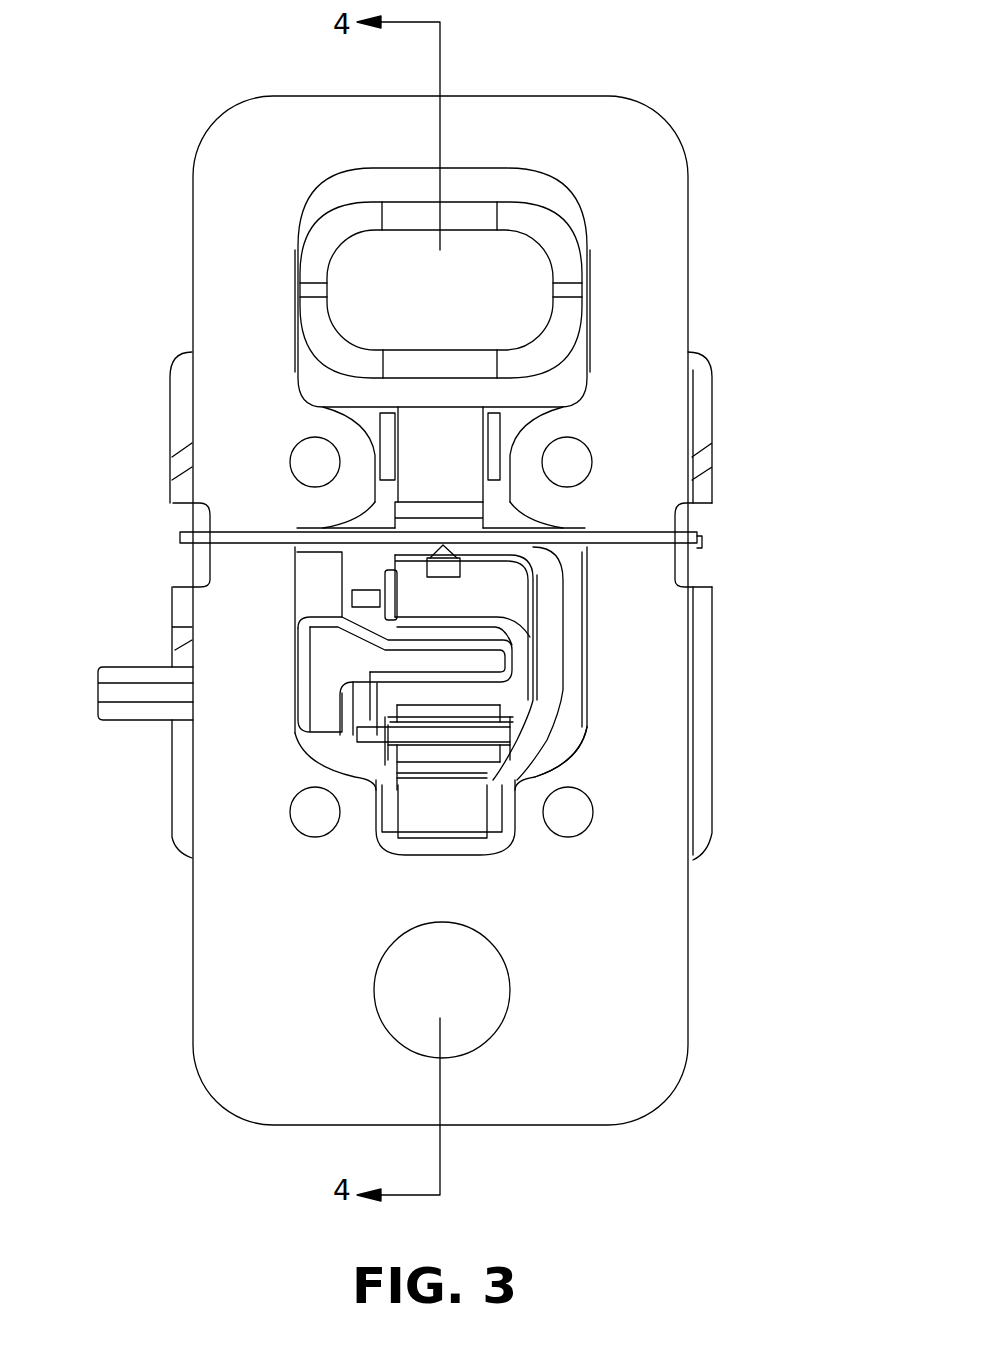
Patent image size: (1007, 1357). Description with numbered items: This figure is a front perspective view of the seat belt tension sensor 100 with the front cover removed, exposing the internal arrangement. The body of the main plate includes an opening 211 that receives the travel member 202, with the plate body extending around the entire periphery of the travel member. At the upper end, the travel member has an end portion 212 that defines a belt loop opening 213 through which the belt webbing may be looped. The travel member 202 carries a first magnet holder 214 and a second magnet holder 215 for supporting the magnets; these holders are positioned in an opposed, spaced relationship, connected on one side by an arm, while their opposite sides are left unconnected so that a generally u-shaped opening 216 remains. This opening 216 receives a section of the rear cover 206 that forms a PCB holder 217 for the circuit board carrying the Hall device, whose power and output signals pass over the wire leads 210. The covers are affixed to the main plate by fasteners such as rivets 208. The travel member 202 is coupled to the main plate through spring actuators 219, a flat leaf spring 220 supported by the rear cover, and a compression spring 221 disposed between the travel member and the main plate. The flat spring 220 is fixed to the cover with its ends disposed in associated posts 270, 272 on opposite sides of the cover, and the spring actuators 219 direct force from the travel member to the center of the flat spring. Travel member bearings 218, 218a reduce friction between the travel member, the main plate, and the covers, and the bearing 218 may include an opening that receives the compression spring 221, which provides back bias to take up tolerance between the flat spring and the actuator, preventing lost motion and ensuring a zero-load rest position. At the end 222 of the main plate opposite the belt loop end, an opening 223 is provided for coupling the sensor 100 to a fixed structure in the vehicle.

The seat belt tension sensor 100 is at (525, 80).
The travel member 202 is at (337, 233).
The end portion 212 is at (532, 228).
The belt loop opening 213 is at (520, 283).
The travel member bearing 218a is at (433, 458).
The rear cover 206 is at (698, 385).
The spring actuator 219 is at (447, 565).
The first flat leaf spring 220 is at (200, 537).
The post 270 is at (177, 572).
The first magnet holder 214 is at (497, 602).
The post 272 is at (705, 573).
The PCB holder 217 is at (337, 658).
The opening 211 is at (575, 653).
The wire leads 210 is at (123, 710).
The opening 216 is at (480, 695).
The second magnet holder 215 is at (557, 798).
The travel member bearing 218 is at (433, 800).
The rivets 208 is at (575, 827).
The compression spring 221 is at (452, 845).
The end of the main plate 222 is at (253, 1062).
The opening 223 is at (477, 1013).